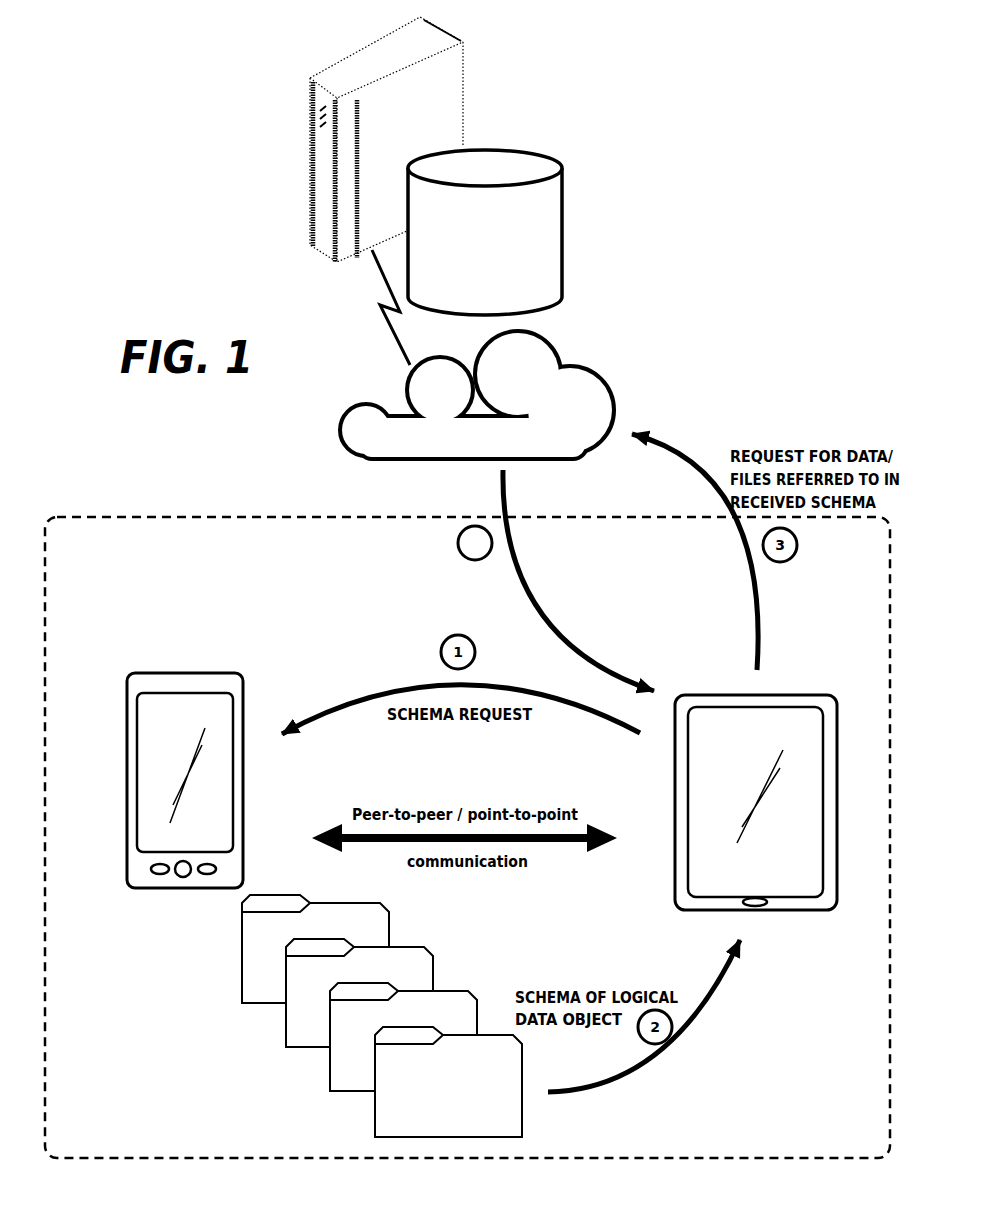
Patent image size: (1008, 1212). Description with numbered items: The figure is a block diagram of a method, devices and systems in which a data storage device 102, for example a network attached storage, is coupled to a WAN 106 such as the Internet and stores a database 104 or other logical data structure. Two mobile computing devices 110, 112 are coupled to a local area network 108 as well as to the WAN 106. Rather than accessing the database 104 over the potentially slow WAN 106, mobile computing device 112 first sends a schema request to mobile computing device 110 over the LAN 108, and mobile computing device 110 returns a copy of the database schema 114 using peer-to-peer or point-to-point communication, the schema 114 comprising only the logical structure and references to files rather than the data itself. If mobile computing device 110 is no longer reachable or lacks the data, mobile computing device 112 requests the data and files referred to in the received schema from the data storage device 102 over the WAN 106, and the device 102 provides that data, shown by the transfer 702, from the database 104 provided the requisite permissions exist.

The data storage device 102 is at (467, 71).
The database 104 is at (562, 217).
The WAN 106 is at (548, 338).
The local area network (LAN) 108 is at (125, 515).
The mobile computing device 110 is at (193, 670).
The mobile computing device 112 is at (803, 692).
The database schema 114 is at (258, 1044).
The data/files transfer referred to in received schema 702 is at (622, 683).